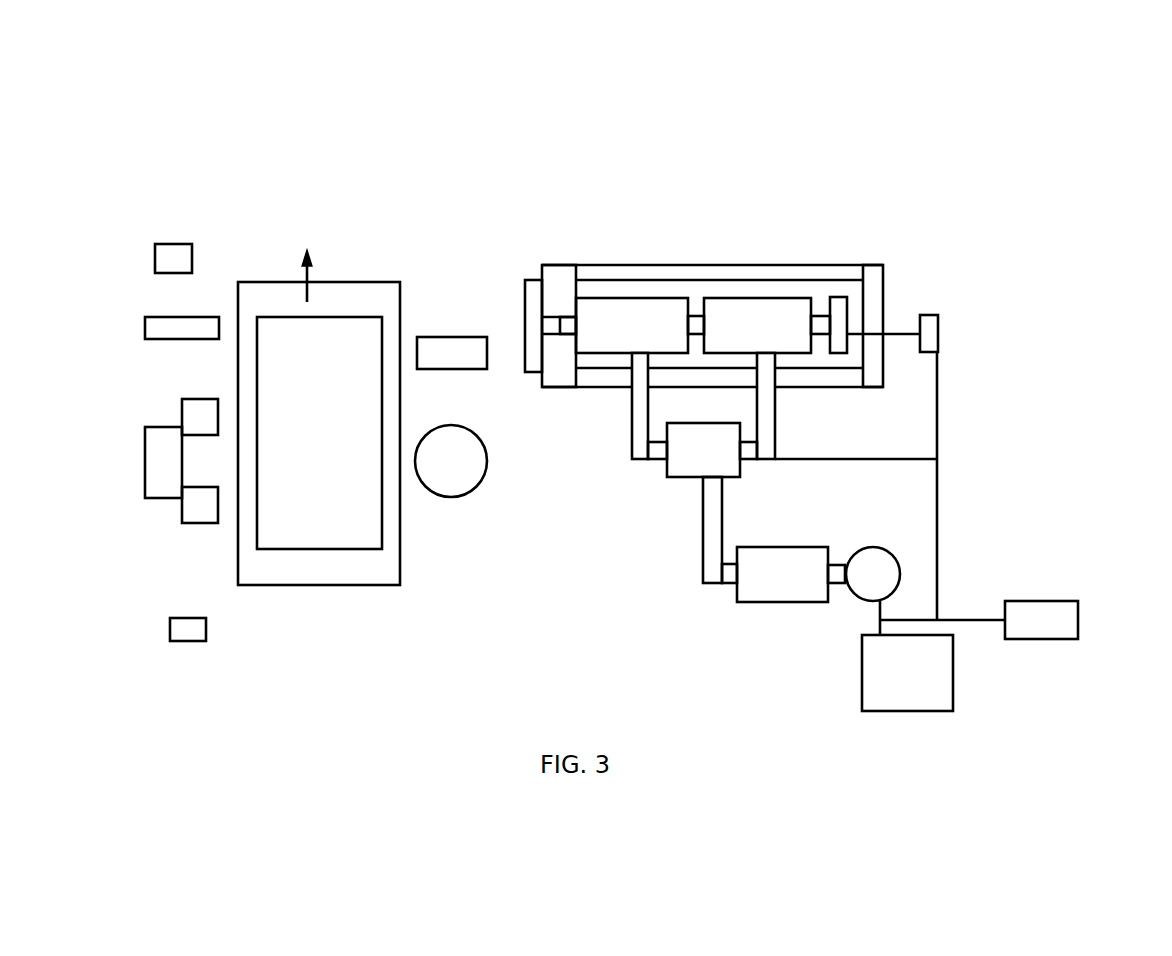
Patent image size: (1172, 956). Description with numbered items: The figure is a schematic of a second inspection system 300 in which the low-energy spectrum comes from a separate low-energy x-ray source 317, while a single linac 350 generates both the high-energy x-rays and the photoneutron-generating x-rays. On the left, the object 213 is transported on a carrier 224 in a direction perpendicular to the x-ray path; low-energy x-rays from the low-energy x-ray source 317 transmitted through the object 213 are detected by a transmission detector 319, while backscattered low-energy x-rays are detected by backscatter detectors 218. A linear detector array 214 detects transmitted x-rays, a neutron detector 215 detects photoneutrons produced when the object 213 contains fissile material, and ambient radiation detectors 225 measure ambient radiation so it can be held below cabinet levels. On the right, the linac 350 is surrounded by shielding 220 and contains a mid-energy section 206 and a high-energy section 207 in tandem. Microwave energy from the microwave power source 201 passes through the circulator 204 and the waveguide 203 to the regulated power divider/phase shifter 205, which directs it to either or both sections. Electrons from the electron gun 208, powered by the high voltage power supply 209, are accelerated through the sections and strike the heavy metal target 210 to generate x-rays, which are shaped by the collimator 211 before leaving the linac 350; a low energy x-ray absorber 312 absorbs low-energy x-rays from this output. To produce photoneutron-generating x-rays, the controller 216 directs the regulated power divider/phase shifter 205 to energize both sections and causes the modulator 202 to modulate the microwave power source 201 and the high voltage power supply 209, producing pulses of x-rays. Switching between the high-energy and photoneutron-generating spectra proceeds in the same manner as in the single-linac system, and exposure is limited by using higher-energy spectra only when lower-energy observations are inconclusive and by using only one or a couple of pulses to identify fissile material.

The second inspection system 300 is at (915, 107).
The microwave power source 201 is at (867, 548).
The modulator 202 is at (953, 700).
The waveguide 203 is at (632, 410).
The circulator 204 is at (765, 602).
The regulated power divider/phase shifter 205 is at (737, 478).
The mid-energy section 206 is at (743, 297).
The high-energy section 207 is at (623, 297).
The electron gun 208 is at (838, 297).
The high voltage power supply 209 is at (938, 327).
The heavy metal target 210 is at (570, 324).
The collimator 211 is at (563, 277).
The object 213 is at (323, 551).
The linear detector array 214 is at (150, 317).
The neutron detector 215 is at (443, 337).
The controller 216 is at (1078, 601).
The backscatter detectors 218 is at (193, 523).
The shielding 220 is at (842, 367).
The carrier 224 is at (401, 573).
The ambient radiation detectors 225 is at (155, 253).
The low energy x-ray absorber 312 is at (532, 303).
The low-energy x-ray source 317 is at (143, 468).
The transmission detector 319 is at (460, 498).
The linac 350 is at (833, 252).